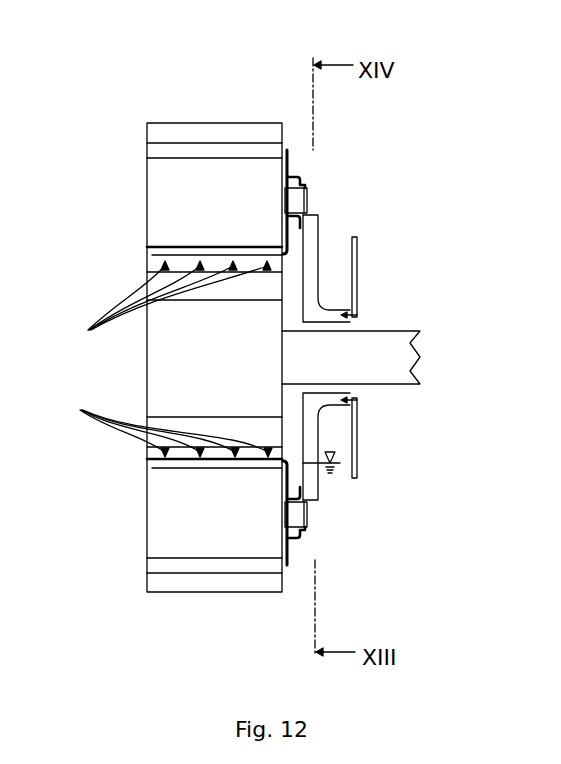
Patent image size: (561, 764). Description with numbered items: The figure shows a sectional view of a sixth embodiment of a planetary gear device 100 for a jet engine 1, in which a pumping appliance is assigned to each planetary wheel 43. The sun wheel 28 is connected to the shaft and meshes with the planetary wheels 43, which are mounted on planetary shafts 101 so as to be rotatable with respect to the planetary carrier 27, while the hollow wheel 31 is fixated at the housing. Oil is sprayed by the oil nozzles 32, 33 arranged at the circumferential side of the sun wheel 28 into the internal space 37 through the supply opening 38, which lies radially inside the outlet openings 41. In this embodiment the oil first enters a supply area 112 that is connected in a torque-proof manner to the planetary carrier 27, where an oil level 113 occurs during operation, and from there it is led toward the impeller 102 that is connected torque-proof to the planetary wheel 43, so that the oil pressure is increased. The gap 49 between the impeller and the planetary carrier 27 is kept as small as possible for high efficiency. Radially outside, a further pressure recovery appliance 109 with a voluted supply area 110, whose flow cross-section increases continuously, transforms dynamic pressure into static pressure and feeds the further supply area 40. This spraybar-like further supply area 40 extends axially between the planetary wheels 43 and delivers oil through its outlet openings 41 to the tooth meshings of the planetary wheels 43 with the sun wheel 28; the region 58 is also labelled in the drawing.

The jet engine 1 is at (82, 128).
The planetary gear device 100 is at (174, 96).
The planetary carrier 27 is at (296, 144).
The sun wheel 28 is at (155, 362).
The hollow wheel 31 is at (198, 128).
The oil nozzle 32 is at (357, 262).
The oil nozzle 33 is at (358, 452).
The internal space 37 is at (310, 268).
The supply opening 38 is at (348, 306).
The further supply area 40 is at (147, 256).
The outlet openings 41 is at (163, 359).
The planetary wheels 43 is at (165, 172).
The gap 49 is at (310, 203).
The stator side region 58 is at (463, 268).
The planetary shafts 101 is at (300, 515).
The impeller 102 is at (312, 182).
The further pressure recovery appliance 109 is at (286, 140).
The supply area 110 is at (282, 246).
The supply area 112 is at (310, 417).
The oil level 113 is at (334, 468).